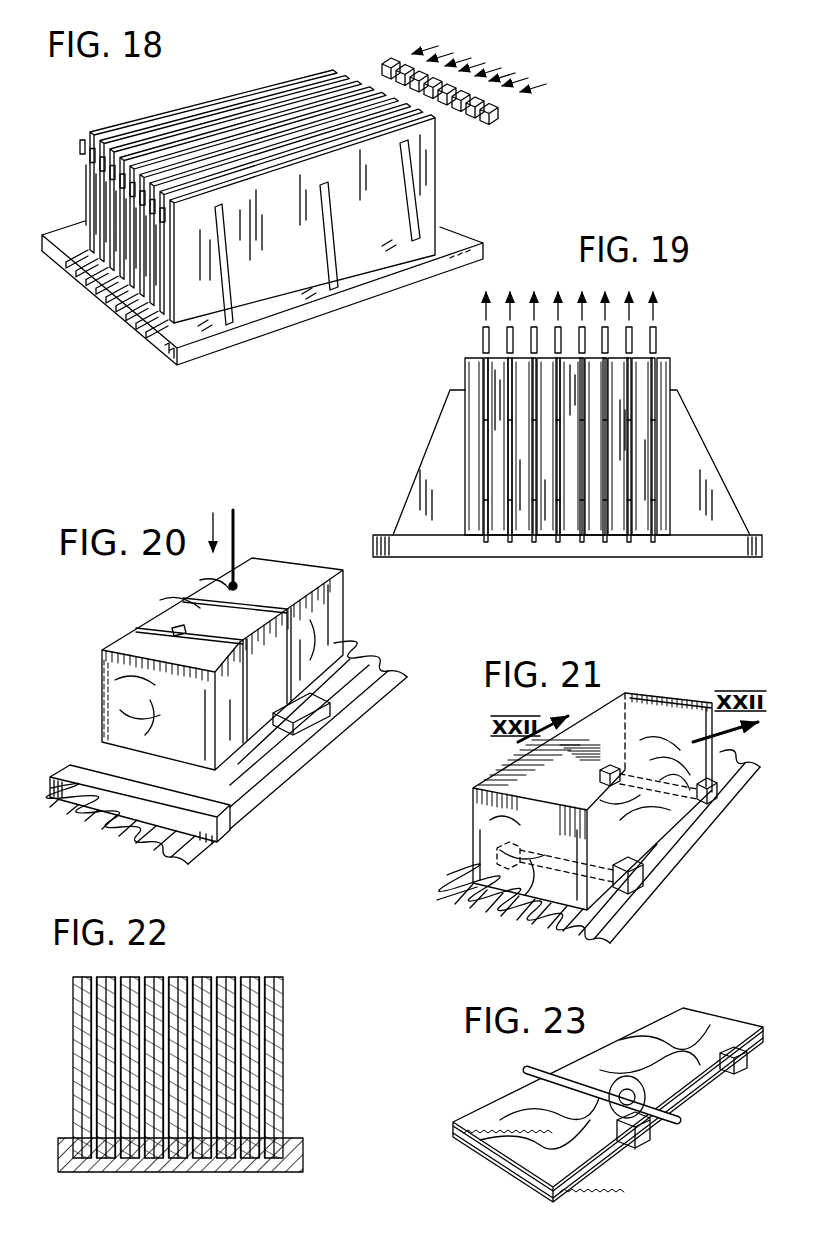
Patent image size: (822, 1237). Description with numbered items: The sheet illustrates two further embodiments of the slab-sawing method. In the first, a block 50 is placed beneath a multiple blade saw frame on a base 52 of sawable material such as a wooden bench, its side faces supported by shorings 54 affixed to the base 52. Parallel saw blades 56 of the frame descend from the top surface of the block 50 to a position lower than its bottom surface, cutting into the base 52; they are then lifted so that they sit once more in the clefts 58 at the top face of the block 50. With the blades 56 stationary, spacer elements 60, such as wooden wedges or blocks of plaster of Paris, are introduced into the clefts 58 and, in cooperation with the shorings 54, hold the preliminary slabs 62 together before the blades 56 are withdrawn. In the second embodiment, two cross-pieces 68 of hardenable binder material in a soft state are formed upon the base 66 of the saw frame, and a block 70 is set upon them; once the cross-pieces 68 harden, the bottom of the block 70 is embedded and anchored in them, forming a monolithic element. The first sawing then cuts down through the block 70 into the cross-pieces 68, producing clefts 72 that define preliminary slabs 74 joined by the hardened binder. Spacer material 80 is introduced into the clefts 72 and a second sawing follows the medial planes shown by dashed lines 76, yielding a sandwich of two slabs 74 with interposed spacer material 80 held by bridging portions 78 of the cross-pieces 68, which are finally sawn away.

In FIG. 18, the block 50 is at (455, 180).
In FIG. 19, the block 50 is at (684, 340).
In FIG. 18, the base 52 is at (453, 237).
In FIG. 19, the base 52 is at (665, 545).
In FIG. 18, the shorings 54 is at (226, 322).
In FIG. 19, the shorings 54 is at (440, 540).
In FIG. 18, the saw blades 56 is at (92, 138).
In FIG. 19, the saw blades 56 is at (484, 335).
In FIG. 18, the clefts 58 is at (97, 180).
In FIG. 19, the clefts 58 is at (486, 445).
In FIG. 18, the spacer elements 60 is at (385, 65).
In FIG. 19, the spacer elements 60 is at (655, 395).
In FIG. 18, the preliminary slabs 62 is at (293, 86).
In FIG. 19, the preliminary slabs 62 is at (466, 400).
In FIG. 20, the base 66 is at (365, 690).
In FIG. 21, the base 66 is at (600, 930).
In FIG. 20, the cross-pieces 68 is at (325, 715).
In FIG. 21, the cross-pieces 68 is at (713, 800).
In FIG. 22, the cross-pieces 68 is at (68, 1160).
In FIG. 20, the block 70 is at (340, 607).
In FIG. 21, the block 70 is at (685, 697).
In FIG. 22, the clefts 72 is at (100, 978).
In FIG. 22, the preliminary slabs 74 is at (283, 988).
In FIG. 23, the preliminary slabs 74 is at (643, 1047).
In FIG. 22, the medial planes 76 is at (285, 1018).
In FIG. 23, the bridging portions 78 is at (740, 1063).
In FIG. 23, the spacer material 80 is at (478, 1150).